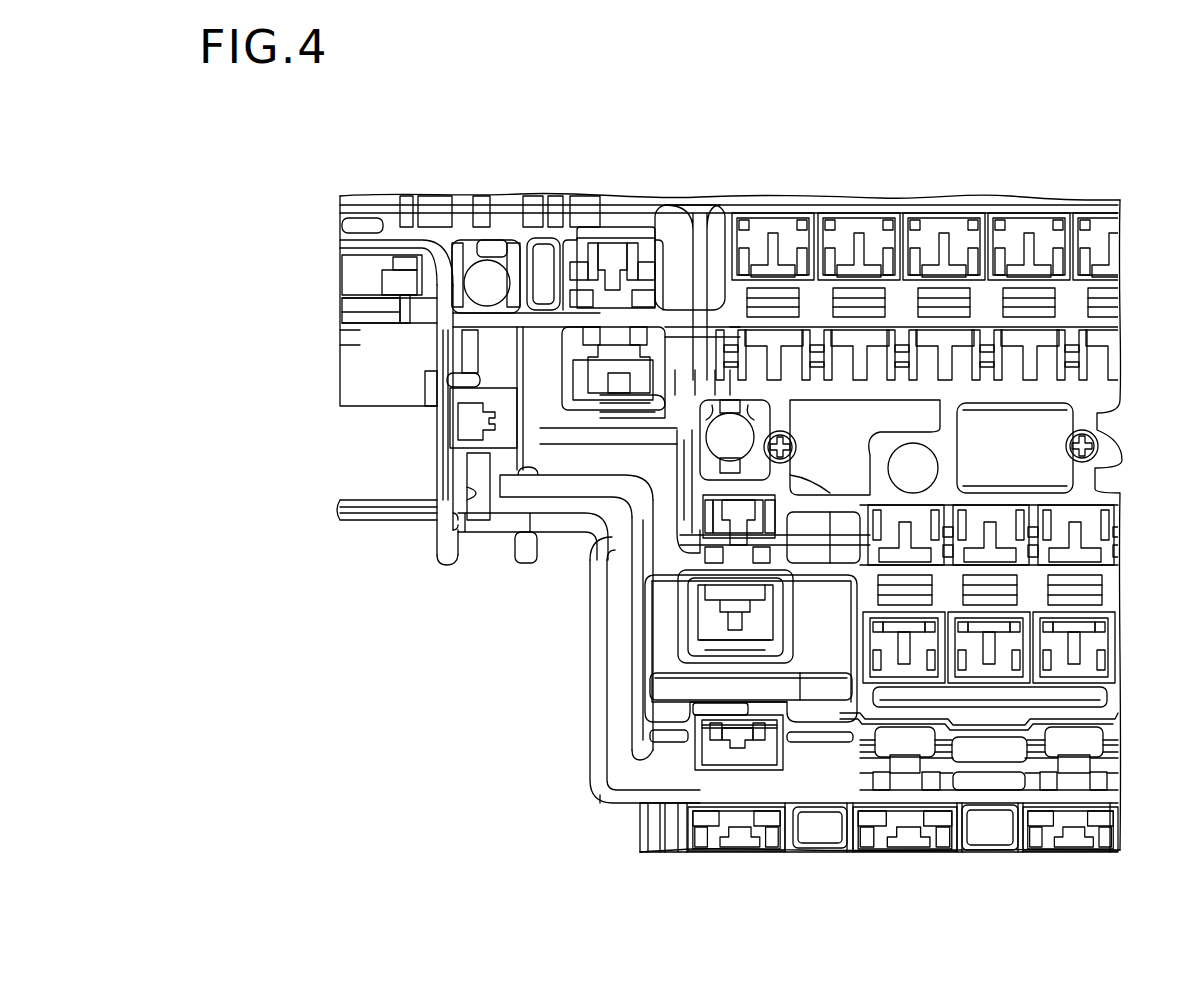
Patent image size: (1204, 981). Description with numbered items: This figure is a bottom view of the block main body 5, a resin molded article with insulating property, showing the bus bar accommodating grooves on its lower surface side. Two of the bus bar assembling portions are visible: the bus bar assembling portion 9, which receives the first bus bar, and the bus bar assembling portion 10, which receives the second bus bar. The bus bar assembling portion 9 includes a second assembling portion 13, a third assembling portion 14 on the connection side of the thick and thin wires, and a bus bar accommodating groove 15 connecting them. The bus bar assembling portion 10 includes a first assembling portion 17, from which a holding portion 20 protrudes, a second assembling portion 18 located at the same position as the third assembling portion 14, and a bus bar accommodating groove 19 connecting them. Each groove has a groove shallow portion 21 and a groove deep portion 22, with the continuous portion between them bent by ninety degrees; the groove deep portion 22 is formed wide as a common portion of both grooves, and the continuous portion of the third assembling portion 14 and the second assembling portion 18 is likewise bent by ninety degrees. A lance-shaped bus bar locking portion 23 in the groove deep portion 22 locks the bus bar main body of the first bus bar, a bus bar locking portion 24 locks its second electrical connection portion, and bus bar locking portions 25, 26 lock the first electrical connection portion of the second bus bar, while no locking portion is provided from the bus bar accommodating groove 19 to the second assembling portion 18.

The block main body 5 is at (1026, 154).
The bus bar assembling portion 9 is at (1072, 742).
The bus bar assembling portion 10 is at (1046, 429).
The second assembling portion 13 is at (988, 780).
The third assembling portion 14 is at (360, 338).
The bus bar accommodating groove 15 is at (618, 720).
The first assembling portion 17 is at (1010, 475).
The second assembling portion 18 is at (350, 337).
The bus bar accommodating groove 19 is at (626, 460).
The holding portion 20 is at (1098, 434).
The groove shallow portion 21 is at (625, 640).
The groove deep portion 22 is at (485, 355).
The bus bar locking portion 23 is at (478, 424).
The bus bar locking portion 24 is at (738, 745).
The bus bar locking portion 25 is at (738, 528).
The bus bar locking portion 26 is at (612, 372).